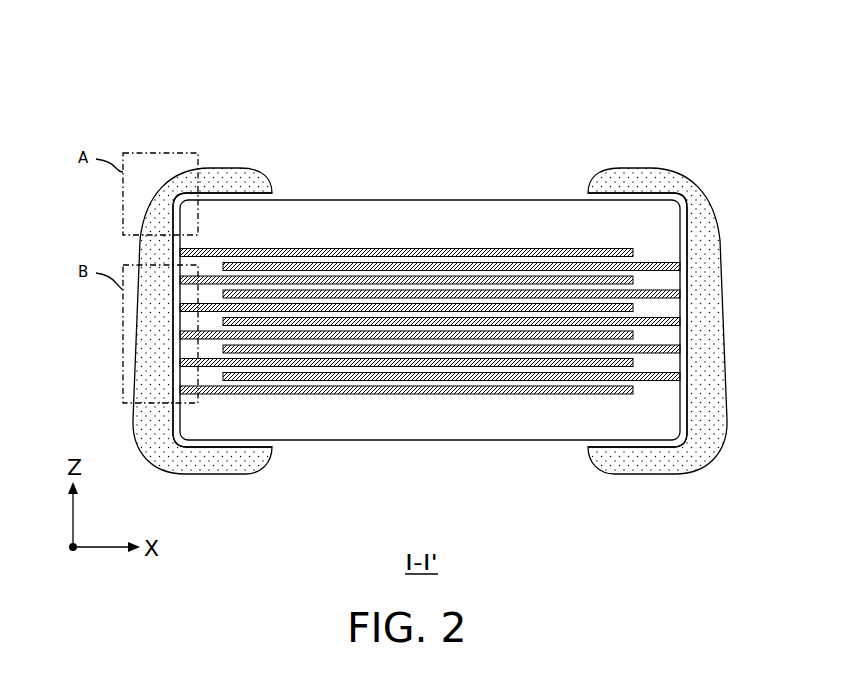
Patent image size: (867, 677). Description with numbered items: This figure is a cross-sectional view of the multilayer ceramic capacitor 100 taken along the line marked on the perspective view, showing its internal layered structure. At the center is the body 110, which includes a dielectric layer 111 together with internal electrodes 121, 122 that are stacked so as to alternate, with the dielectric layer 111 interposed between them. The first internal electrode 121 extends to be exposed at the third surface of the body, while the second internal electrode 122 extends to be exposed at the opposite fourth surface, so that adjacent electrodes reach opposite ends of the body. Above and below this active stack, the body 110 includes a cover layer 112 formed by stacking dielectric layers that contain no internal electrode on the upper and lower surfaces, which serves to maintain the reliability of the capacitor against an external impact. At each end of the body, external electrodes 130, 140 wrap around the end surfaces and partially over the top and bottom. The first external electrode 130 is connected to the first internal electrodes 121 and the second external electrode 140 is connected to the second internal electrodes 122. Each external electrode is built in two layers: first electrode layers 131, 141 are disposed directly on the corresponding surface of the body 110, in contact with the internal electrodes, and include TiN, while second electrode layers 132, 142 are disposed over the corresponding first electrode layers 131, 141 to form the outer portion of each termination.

The multilayer capacitor 100 is at (425, 67).
The body 110 is at (463, 200).
The dielectric layer 111 is at (337, 247).
The cover layer 112 is at (410, 213).
The first internal electrode 121 is at (290, 248).
The second internal electrode 122 is at (542, 262).
The first external electrode 130 is at (203, 367).
The first electrode layer 131 is at (204, 450).
The second electrode layer 132 is at (236, 462).
The second external electrode 140 is at (657, 367).
The first electrode layer 141 is at (654, 450).
The second electrode layer 142 is at (672, 529).